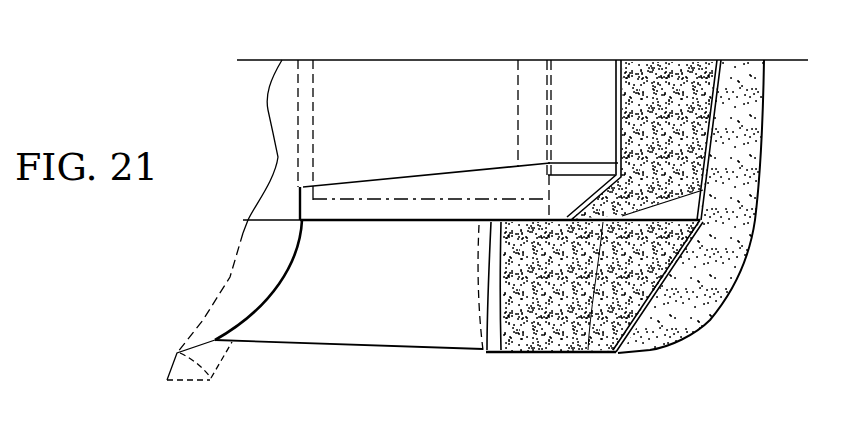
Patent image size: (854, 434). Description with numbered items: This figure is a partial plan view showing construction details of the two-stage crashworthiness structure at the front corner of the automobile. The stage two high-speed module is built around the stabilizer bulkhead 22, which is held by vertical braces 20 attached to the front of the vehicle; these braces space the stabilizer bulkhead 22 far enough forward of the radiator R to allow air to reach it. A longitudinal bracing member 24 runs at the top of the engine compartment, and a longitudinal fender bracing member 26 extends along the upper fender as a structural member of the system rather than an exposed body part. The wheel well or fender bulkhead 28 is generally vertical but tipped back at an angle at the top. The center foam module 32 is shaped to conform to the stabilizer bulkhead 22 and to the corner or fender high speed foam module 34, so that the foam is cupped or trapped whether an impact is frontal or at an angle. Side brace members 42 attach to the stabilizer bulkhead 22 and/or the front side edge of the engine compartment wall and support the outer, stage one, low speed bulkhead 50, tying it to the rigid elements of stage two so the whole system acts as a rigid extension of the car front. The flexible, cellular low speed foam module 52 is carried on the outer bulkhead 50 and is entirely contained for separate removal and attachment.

The radiator R is at (517, 77).
The vertical braces 20 is at (580, 163).
The stabilizer bulkhead 22 is at (623, 77).
The longitudinal bracing member 24 is at (420, 173).
The longitudinal fender bracing member 26 is at (332, 325).
The fender bulkhead 28 is at (495, 357).
The center foam module 32 is at (683, 82).
The fender high speed foam module 34 is at (552, 352).
The side brace members 42 is at (598, 352).
The outer bulkhead 50 is at (710, 162).
The low speed foam module 52 is at (730, 233).